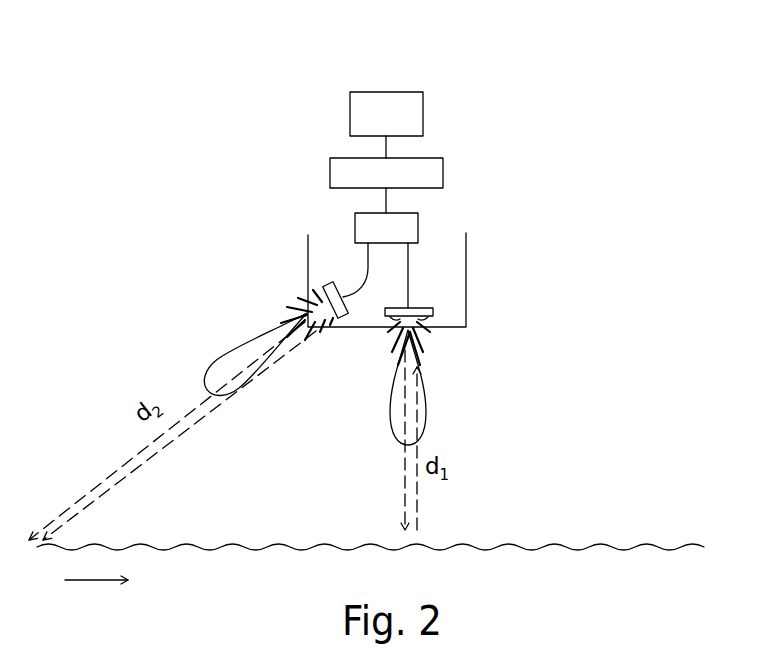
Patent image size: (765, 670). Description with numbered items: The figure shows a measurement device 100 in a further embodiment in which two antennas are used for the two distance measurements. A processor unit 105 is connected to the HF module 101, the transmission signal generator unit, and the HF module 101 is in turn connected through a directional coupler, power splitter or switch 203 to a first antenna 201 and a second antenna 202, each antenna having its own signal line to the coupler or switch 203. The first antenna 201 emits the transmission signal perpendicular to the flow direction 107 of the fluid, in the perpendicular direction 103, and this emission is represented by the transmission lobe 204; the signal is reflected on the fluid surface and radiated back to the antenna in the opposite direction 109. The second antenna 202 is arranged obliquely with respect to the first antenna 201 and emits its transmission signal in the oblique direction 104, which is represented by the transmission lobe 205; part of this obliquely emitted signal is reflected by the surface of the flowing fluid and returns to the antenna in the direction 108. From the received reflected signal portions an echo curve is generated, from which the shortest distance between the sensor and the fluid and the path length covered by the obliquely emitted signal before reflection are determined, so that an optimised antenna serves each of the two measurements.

The measurement device 100 is at (514, 61).
The HF module 101 is at (432, 163).
The perpendicular emission direction 103 is at (405, 487).
The oblique emission direction 104 is at (73, 500).
The processor unit 105 is at (362, 100).
The flow speed 107 is at (75, 583).
The oblique return direction 108 is at (153, 452).
The perpendicular return direction 109 is at (418, 487).
The first antenna 201 is at (431, 326).
The second antenna 202 is at (323, 283).
The directional coupler, power splitter or switch 203 is at (408, 227).
The transmission lobe 204 is at (427, 407).
The transmission lobe 205 is at (240, 380).